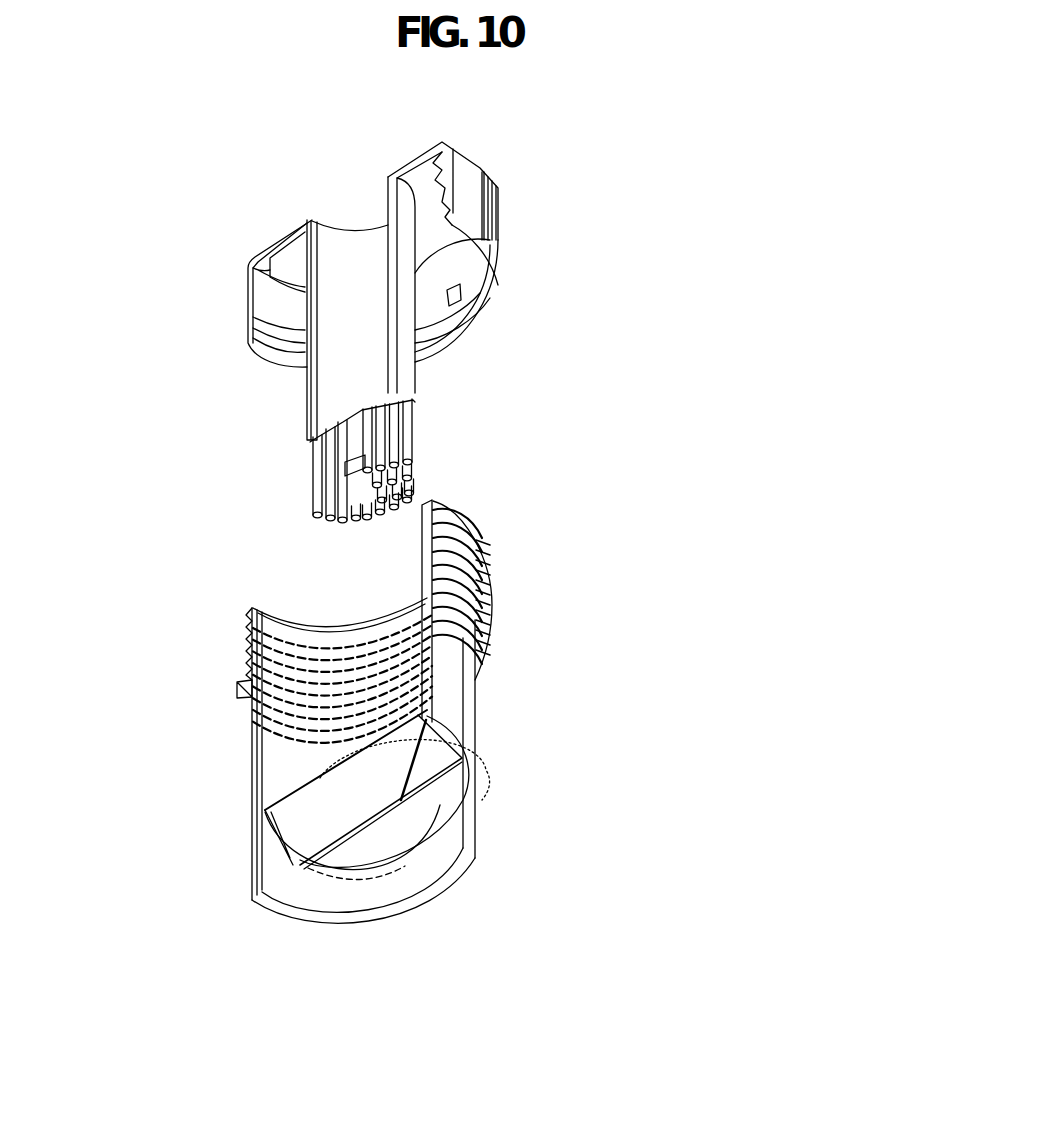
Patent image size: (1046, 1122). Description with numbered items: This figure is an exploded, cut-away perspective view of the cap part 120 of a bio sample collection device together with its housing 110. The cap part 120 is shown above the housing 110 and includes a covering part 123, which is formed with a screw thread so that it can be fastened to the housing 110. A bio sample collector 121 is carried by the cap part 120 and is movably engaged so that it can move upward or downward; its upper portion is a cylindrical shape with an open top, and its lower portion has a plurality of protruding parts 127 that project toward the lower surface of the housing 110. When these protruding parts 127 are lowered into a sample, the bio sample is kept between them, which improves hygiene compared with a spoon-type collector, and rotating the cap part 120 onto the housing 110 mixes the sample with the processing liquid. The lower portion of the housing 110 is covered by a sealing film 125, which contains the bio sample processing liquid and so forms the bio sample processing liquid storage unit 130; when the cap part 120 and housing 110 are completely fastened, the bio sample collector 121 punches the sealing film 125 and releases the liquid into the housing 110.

The housing 110 is at (480, 692).
The cap part 120 is at (627, 203).
The bio sample collector 121 is at (410, 434).
The protruding parts 127 is at (362, 461).
The covering part 123 is at (468, 202).
The sealing film 125 is at (477, 747).
The bio sample processing liquid storage unit 130 is at (473, 813).